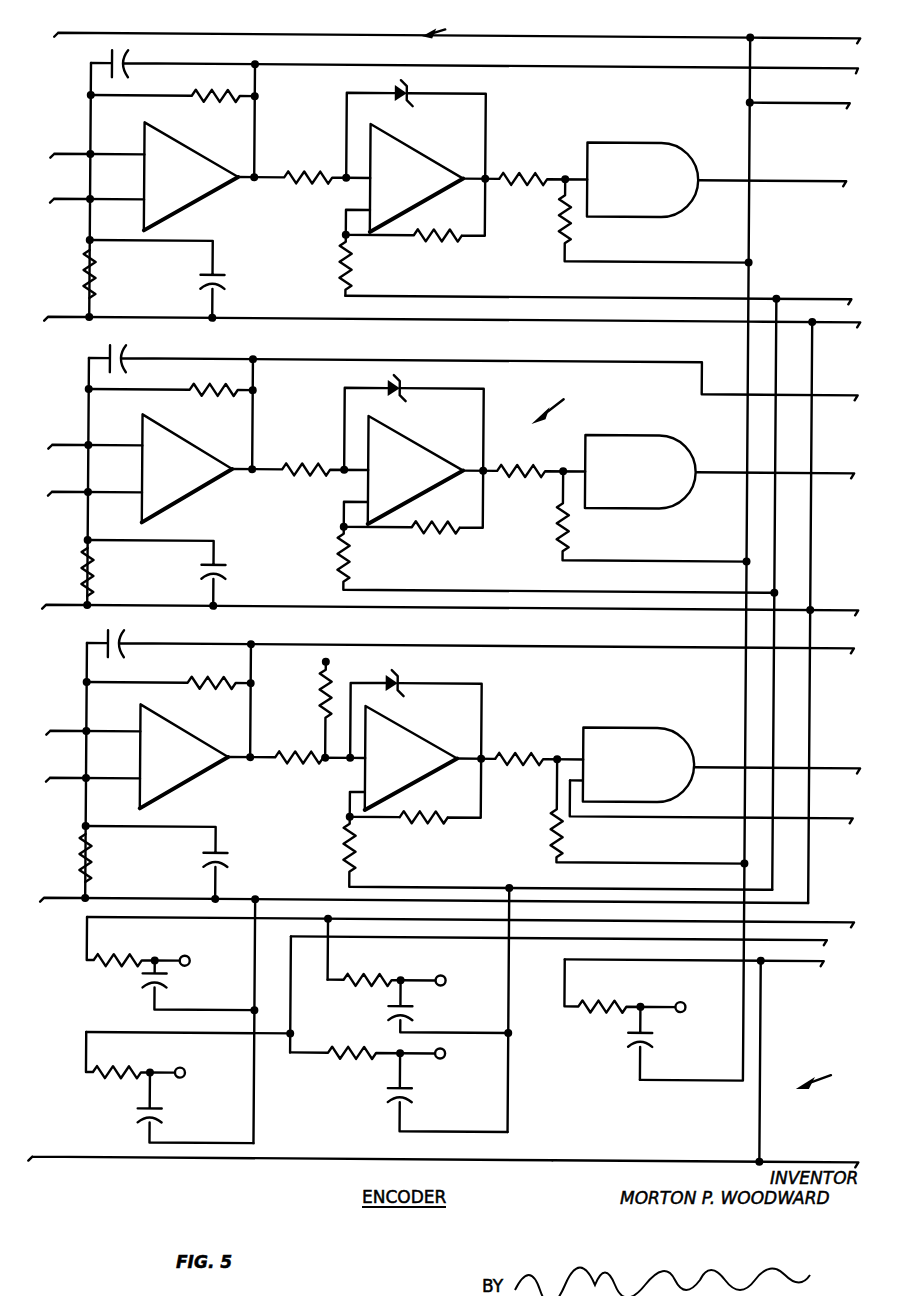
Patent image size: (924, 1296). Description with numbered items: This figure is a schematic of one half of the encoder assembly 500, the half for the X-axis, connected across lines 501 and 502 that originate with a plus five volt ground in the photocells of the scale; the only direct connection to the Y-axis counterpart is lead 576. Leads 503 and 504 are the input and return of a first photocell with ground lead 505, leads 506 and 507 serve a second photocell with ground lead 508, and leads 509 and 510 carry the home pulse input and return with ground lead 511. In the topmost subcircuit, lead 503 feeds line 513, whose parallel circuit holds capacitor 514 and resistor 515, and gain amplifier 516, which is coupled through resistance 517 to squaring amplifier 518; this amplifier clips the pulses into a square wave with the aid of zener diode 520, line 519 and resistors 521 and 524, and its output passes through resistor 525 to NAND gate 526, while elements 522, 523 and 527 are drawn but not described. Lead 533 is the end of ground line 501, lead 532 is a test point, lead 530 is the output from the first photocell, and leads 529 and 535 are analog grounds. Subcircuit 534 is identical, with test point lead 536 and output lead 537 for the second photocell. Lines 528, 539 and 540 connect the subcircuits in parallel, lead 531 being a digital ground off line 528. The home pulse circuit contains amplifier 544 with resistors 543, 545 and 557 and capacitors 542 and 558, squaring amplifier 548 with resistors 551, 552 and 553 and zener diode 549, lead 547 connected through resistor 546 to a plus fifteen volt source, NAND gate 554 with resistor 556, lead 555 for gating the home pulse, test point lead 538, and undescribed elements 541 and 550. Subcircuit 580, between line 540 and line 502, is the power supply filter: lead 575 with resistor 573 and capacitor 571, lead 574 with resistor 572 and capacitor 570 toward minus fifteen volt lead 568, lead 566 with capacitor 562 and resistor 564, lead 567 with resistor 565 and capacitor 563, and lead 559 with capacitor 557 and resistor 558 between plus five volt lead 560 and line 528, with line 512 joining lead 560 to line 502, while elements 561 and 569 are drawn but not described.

The encoder assembly 500 is at (450, 28).
The line 501 is at (196, 32).
The line 502 is at (256, 1162).
The lead 503 is at (62, 152).
The lead 504 is at (60, 196).
The lead 505 is at (58, 314).
The lead 506 is at (58, 442).
The lead 507 is at (58, 488).
The lead 508 is at (58, 602).
The lead 509 is at (58, 728).
The lead 510 is at (58, 776).
The lead 511 is at (58, 894).
The line 512 is at (770, 1040).
The line 513 is at (113, 152).
The capacitor 514 is at (125, 66).
The resistor 515 is at (192, 95).
The operational integrated circuit gain amplifier 516 is at (192, 150).
The resistance 517 is at (305, 168).
The squaring circuit operational amplifier 518 is at (412, 150).
The line 519 is at (480, 91).
The zener diode 520 is at (392, 86).
The resistor 521 is at (422, 240).
The resistor 522 is at (96, 278).
The capacitor 523 is at (218, 274).
The resistor 524 is at (340, 284).
The resistor 525 is at (505, 170).
The NAND gate 526 is at (650, 139).
The resistor 527 is at (570, 232).
The line 528 is at (752, 232).
The lead 529 is at (806, 300).
The lead 530 is at (823, 178).
The lead 531 is at (835, 104).
The lead 532 is at (790, 66).
The lead 533 is at (826, 36).
The subcircuit 534 is at (430, 477).
The lead 535 is at (820, 326).
The lead 536 is at (842, 396).
The lead 537 is at (832, 475).
The lead 538 is at (832, 644).
The line 539 is at (773, 740).
The line 540 is at (812, 764).
The lead 541 is at (85, 668).
The capacitor 542 is at (126, 644).
The resistor 543 is at (192, 680).
The operational amplifier 544 is at (180, 730).
The resistor 545 is at (304, 746).
The resistor 546 is at (322, 696).
The lead 547 is at (326, 661).
The squaring amplifier 548 is at (420, 732).
The zener diode 549 is at (410, 676).
The feedback loop 550 is at (488, 700).
The resistor 551 is at (424, 822).
The resistor 552 is at (345, 862).
The resistor 553 is at (510, 752).
The NAND gate 554 is at (648, 722).
The lead 555 is at (855, 800).
The resistor 556 is at (556, 836).
The resistor 557 is at (96, 862).
The capacitor 558 is at (230, 852).
The lead 559 is at (686, 998).
The lead 560 is at (780, 968).
The line end 561 is at (824, 1156).
The capacitor 562 is at (390, 1102).
The capacitor 563 is at (392, 1016).
The resistor 564 is at (340, 1060).
The resistor 565 is at (376, 970).
The lead 566 is at (444, 1060).
The lead 567 is at (440, 972).
The lead 568 is at (826, 946).
The line 569 is at (136, 1030).
The capacitor 570 is at (166, 1118).
The capacitor 571 is at (168, 988).
The resistor 572 is at (108, 1086).
The resistor 573 is at (96, 970).
The lead 574 is at (180, 1066).
The lead 575 is at (184, 955).
The lead 576 is at (818, 916).
The subcircuit 580 is at (828, 1071).